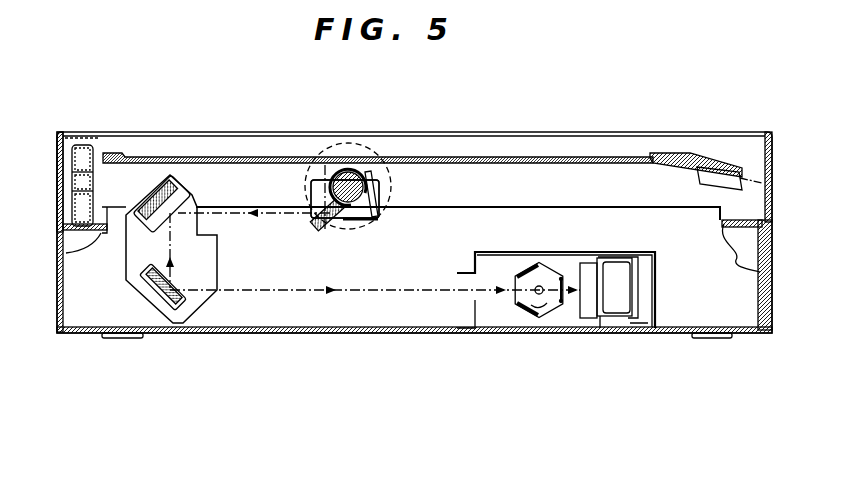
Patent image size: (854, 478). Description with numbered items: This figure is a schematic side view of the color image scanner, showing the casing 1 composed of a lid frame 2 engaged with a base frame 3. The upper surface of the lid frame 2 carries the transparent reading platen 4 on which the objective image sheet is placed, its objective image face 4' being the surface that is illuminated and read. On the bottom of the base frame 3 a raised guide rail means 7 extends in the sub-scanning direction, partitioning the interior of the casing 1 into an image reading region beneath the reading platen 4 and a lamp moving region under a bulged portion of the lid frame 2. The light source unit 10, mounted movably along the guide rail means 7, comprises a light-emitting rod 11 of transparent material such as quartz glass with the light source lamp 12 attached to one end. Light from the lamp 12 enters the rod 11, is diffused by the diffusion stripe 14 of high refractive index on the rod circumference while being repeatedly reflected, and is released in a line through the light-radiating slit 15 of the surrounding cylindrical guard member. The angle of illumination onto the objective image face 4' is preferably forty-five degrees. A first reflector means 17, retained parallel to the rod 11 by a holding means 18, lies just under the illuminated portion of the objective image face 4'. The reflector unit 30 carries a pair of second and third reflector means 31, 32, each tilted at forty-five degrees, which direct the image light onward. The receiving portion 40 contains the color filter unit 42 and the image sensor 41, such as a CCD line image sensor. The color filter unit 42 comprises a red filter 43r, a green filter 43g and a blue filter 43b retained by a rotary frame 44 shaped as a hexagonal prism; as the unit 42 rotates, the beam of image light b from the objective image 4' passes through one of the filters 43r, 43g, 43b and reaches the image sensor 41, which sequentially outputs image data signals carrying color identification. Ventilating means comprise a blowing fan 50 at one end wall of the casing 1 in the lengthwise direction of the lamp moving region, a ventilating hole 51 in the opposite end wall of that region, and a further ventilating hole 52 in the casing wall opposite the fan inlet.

The casing 1 is at (410, 277).
The lid frame 2 is at (57, 304).
The base frame 3 is at (90, 335).
The transparent reading platen 4 is at (378, 121).
The objective image face 4' is at (626, 128).
The guide rail means 7 is at (618, 207).
The light source unit 10 is at (374, 172).
The light-emitting rod 11 is at (357, 178).
The light source lamp 12 is at (378, 175).
The diffusion stripe 14 is at (372, 221).
The light-radiating slit 15 is at (338, 172).
The first reflector means 17 is at (314, 230).
The holding means 18 is at (377, 192).
The reflector unit 30 is at (197, 248).
The second reflector means 31 is at (187, 197).
The third reflector means 32 is at (183, 306).
The receiving portion 40 is at (569, 296).
The image sensor 41 is at (612, 303).
The color filter unit 42 is at (528, 296).
The green filter 43g is at (528, 264).
The blue filter 43b is at (560, 276).
The red filter 43r is at (540, 318).
The rotary frame 44 is at (568, 314).
The blowing fan 50 is at (95, 148).
The ventilating hole 51 is at (764, 160).
The ventilating hole 52 is at (56, 158).
The image light beam b is at (430, 284).